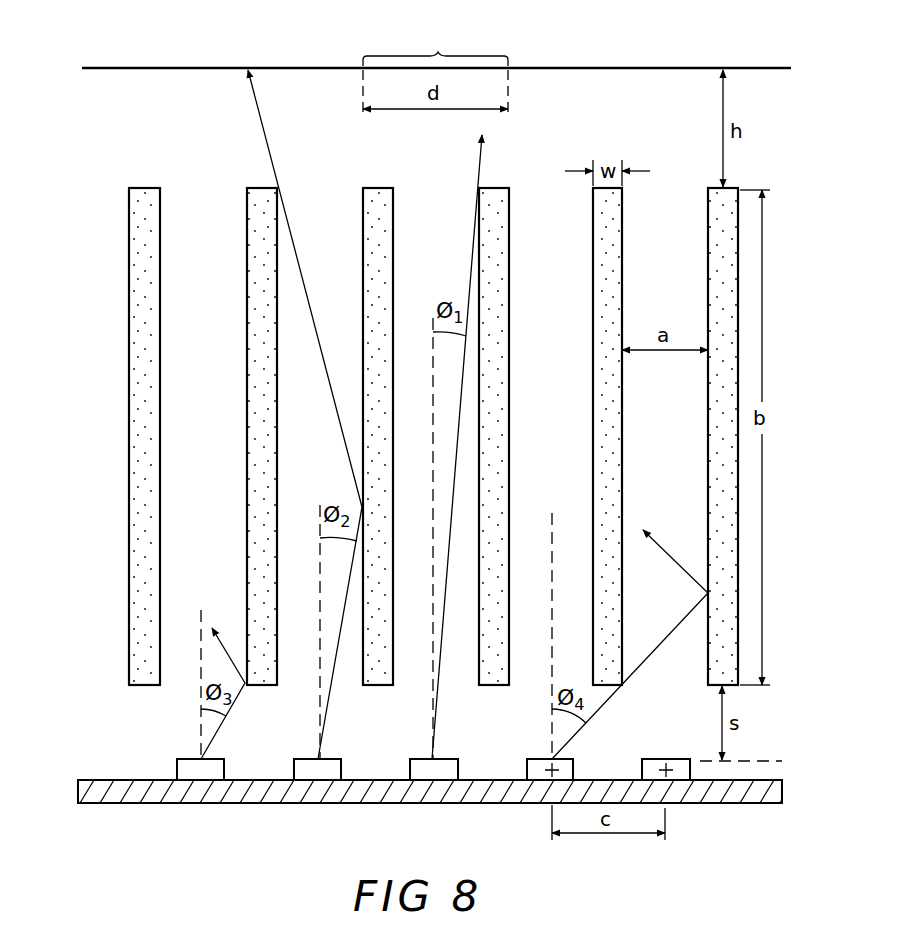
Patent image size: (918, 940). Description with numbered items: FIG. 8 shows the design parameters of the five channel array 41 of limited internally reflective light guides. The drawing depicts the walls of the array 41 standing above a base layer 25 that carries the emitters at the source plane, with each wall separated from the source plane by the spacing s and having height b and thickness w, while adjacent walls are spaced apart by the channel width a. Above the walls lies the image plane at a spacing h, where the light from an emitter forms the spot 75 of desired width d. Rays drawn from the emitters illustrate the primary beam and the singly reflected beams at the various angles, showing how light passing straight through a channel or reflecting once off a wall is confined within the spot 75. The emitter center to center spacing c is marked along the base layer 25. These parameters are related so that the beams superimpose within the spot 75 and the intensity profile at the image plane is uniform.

The spot 75 is at (446, 30).
The array 41 is at (778, 328).
The substrate with emitters 25 is at (765, 762).